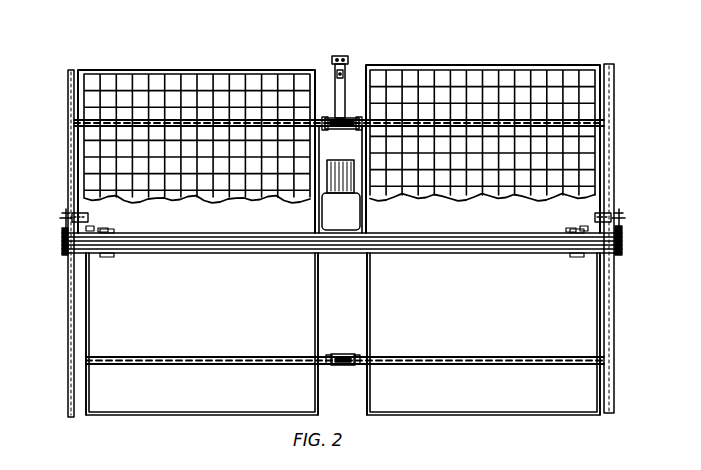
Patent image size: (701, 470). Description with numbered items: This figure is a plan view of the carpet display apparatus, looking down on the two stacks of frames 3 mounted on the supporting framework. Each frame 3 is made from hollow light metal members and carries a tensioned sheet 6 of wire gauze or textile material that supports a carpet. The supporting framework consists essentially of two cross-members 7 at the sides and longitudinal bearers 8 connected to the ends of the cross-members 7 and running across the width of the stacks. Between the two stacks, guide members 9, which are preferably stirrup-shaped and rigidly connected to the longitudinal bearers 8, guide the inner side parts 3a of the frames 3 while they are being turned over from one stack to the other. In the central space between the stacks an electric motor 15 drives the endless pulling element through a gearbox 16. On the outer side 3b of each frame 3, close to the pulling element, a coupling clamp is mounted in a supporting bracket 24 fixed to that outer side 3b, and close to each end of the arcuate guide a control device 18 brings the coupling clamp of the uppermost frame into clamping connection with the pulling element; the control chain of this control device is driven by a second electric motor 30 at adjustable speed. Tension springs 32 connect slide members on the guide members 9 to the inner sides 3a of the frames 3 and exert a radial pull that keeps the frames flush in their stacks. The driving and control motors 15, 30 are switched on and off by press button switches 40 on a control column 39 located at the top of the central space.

The frame 3 is at (200, 414).
The inner side part 3a is at (368, 311).
The outer side 3b is at (87, 315).
The tensioned sheet 6 is at (531, 93).
The cross-member 7 is at (70, 104).
The longitudinal bearer 8 is at (452, 120).
The guide member 9 is at (343, 129).
The electric motor 15 is at (341, 170).
The gearbox 16 is at (356, 219).
The control device 18 is at (63, 215).
The supporting bracket 24 is at (623, 245).
The electric motor 30 is at (90, 218).
The tension spring 32 is at (359, 118).
The control column 39 is at (349, 61).
The press button switch 40 is at (343, 57).